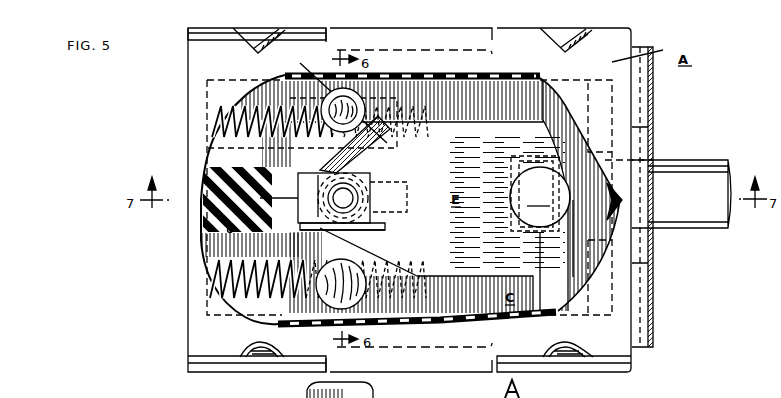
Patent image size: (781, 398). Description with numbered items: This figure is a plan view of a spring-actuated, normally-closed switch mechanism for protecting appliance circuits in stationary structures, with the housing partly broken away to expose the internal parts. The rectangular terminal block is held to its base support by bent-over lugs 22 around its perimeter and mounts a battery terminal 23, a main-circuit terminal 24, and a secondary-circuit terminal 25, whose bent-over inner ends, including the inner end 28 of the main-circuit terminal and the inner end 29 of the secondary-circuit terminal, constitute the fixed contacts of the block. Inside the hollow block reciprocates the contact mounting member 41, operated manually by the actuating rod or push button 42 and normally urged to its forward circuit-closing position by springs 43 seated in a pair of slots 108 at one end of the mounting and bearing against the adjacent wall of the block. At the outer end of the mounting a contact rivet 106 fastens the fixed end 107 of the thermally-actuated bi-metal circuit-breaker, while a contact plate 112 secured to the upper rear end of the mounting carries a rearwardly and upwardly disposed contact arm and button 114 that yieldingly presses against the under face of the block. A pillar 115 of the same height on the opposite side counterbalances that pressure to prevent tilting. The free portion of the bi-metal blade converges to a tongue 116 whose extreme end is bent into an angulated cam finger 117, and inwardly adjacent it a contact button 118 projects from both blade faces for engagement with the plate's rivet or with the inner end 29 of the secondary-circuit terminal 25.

The bent-over lugs 22 is at (250, 44).
The battery terminal 23 is at (513, 156).
The main-circuit terminal 24 is at (302, 134).
The secondary-circuit terminal 25 is at (362, 225).
The inner end of main-circuit terminal 28 is at (384, 74).
The inner end of secondary-circuit terminal 29 is at (393, 186).
The contact mounting member 41 is at (560, 297).
The actuating rod 42 is at (711, 229).
The springs 43 is at (225, 136).
The contact rivet 106 is at (540, 197).
The fixed end of circuit-breaker 107 is at (563, 250).
The slots 108 is at (408, 108).
The contact plate 112 is at (362, 152).
The contact arm and button 114 is at (341, 98).
The pillar 115 is at (325, 297).
The tongue 116 is at (207, 242).
The cam finger 117 is at (207, 215).
The contact button 118 is at (403, 208).